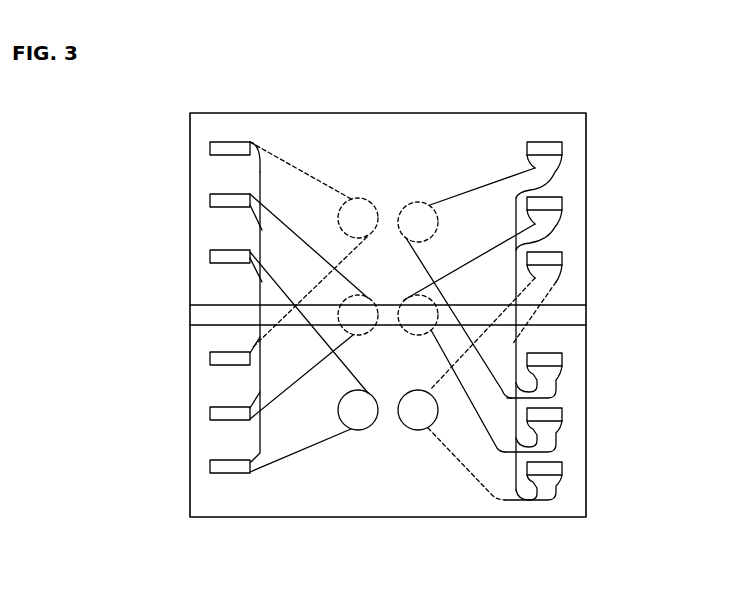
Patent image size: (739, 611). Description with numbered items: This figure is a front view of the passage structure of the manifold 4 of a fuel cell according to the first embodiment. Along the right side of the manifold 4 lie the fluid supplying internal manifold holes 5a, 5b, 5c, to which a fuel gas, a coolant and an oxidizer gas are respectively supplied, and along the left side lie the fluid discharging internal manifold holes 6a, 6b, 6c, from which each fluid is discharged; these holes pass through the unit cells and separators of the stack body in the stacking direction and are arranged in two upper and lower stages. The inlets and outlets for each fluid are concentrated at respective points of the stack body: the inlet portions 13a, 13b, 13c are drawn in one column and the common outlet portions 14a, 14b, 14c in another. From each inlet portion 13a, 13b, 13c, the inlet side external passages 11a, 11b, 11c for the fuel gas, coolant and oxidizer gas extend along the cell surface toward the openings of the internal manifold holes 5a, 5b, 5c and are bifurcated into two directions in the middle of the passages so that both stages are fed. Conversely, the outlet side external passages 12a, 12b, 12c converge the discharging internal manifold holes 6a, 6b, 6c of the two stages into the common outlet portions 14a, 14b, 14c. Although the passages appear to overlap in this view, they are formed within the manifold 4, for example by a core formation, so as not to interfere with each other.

The manifold 4 is at (397, 518).
The fluid supplying internal manifold hole 5a is at (562, 147).
The fluid supplying internal manifold hole 5b is at (562, 200).
The fluid supplying internal manifold hole 5c is at (562, 256).
The fluid discharging internal manifold hole 6a is at (210, 254).
The fluid discharging internal manifold hole 6b is at (210, 203).
The fluid discharging internal manifold hole 6c is at (210, 147).
The inlet side external passage 11a is at (467, 197).
The inlet side external passage 11b is at (531, 237).
The inlet side external passage 11c is at (474, 466).
The outlet side external passage 12a is at (302, 443).
The outlet side external passage 12b is at (253, 221).
The outlet side external passage 12c is at (294, 170).
The inlet portion 13a is at (418, 222).
The inlet portion 13b is at (418, 315).
The inlet portion 13c is at (418, 410).
The outlet portion 14a is at (358, 410).
The outlet portion 14b is at (358, 315).
The outlet portion 14c is at (358, 218).